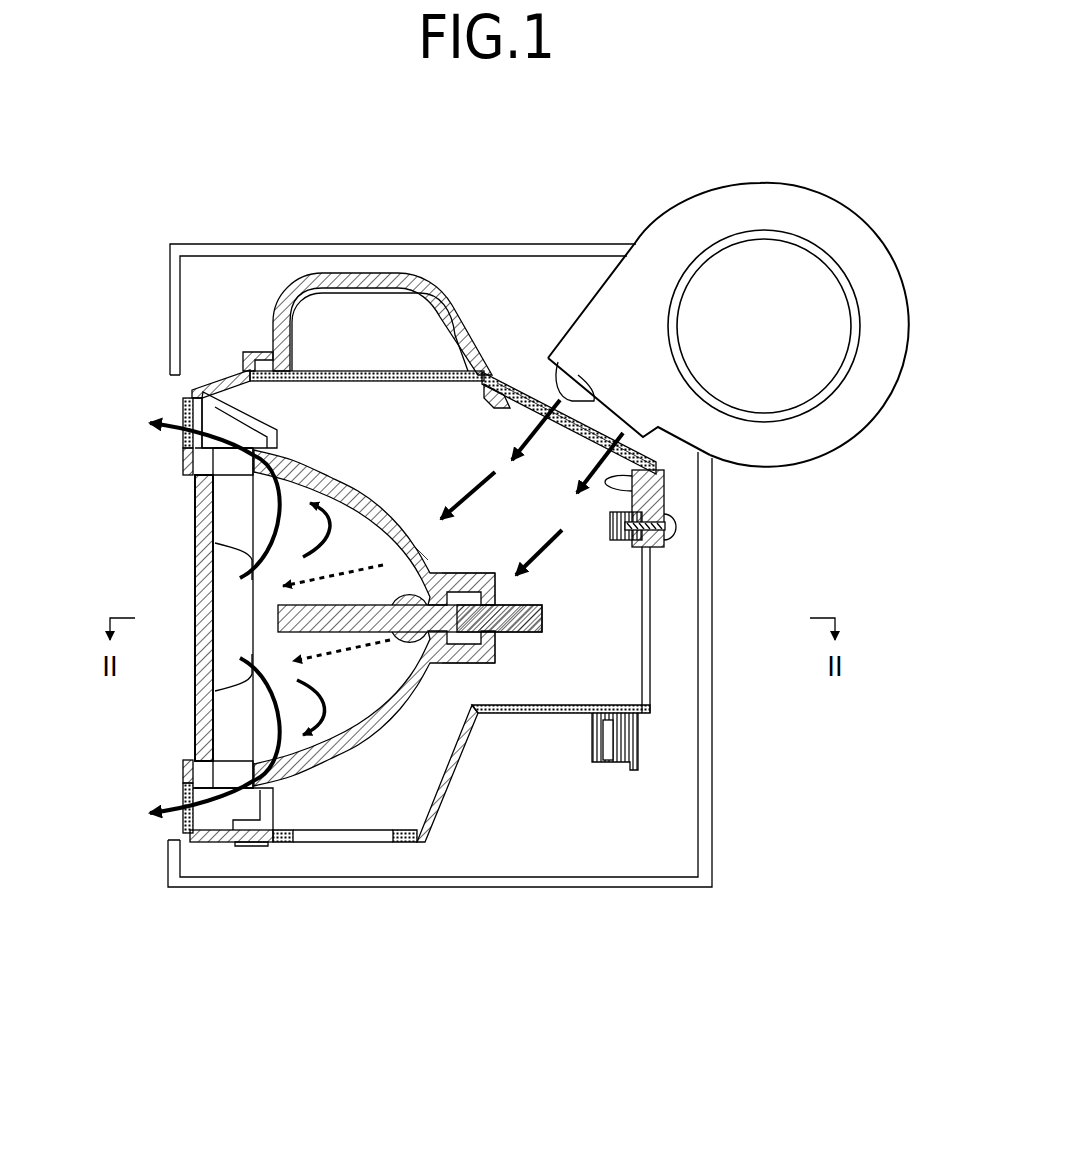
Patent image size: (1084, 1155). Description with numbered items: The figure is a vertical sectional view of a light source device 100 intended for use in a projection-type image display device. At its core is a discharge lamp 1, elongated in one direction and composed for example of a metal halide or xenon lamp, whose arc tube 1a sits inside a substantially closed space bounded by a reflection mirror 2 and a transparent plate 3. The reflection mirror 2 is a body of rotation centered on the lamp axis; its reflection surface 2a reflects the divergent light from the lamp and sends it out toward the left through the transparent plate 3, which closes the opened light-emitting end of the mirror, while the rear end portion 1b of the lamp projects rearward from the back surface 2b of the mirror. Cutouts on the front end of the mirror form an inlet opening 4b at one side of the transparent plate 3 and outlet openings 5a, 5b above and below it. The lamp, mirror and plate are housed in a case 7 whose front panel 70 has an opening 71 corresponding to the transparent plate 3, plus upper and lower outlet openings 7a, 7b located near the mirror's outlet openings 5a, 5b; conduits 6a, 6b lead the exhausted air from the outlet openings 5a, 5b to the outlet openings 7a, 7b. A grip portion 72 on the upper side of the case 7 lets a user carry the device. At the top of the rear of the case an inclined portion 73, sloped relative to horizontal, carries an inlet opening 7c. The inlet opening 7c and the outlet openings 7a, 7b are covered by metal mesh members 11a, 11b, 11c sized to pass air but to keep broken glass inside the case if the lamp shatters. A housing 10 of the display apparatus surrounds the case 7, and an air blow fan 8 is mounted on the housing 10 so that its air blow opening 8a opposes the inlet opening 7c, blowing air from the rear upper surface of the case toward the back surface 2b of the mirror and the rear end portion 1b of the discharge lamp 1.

The discharge lamp 1 is at (446, 773).
The arc tube 1a is at (395, 633).
The rear end portion 1b is at (542, 632).
The reflection mirror 2 is at (345, 485).
The reflection surface 2a is at (432, 560).
The back surface 2b is at (400, 515).
The transparent plate 3 is at (205, 525).
The inlet opening 4b is at (228, 634).
The outlet opening 5a is at (243, 455).
The outlet opening 5b is at (240, 784).
The conduit 6a is at (250, 405).
The conduit 6b is at (270, 840).
The case 7 is at (510, 715).
The outlet opening 7a is at (205, 408).
The outlet opening 7b is at (205, 808).
The inlet opening 7c is at (664, 522).
The air blow fan 8 is at (855, 417).
The air blow opening 8a is at (563, 362).
The housing 10 is at (716, 770).
The mesh member 11a is at (527, 396).
The mesh member 11b is at (187, 425).
The mesh member 11c is at (190, 792).
The front panel 70 is at (205, 770).
The opening 71 is at (192, 470).
The grip portion 72 is at (385, 273).
The inclined portion 73 is at (492, 396).
The light source device 100 is at (445, 852).